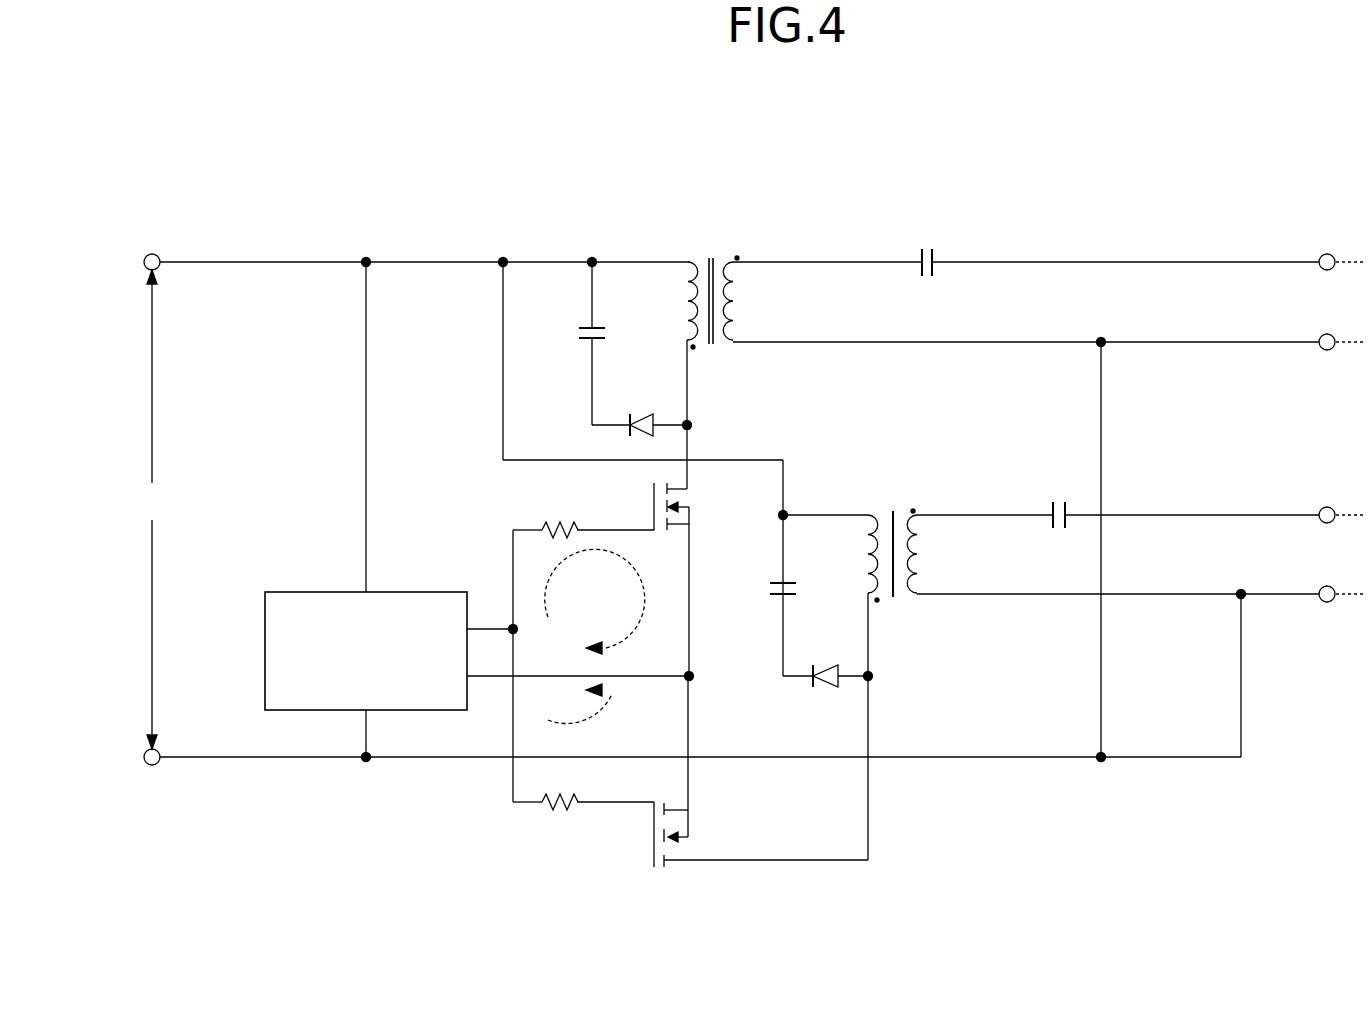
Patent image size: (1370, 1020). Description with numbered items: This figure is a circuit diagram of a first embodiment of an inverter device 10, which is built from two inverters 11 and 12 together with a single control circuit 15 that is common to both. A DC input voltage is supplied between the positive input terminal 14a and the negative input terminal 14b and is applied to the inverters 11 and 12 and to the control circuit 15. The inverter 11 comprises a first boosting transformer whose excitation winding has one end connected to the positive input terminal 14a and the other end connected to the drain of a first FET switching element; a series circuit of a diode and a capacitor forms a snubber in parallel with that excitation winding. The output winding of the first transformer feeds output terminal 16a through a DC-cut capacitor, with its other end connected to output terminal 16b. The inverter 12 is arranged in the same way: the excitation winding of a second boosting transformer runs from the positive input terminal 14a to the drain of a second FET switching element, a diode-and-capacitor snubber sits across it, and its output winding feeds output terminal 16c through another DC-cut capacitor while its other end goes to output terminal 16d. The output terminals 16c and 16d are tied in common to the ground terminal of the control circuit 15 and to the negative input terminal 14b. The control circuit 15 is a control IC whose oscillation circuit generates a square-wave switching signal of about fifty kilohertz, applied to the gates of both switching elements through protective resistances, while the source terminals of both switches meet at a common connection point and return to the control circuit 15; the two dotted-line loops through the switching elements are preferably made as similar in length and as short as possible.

The inverter device 10 is at (568, 163).
The inverter 11 is at (778, 216).
The inverter 12 is at (948, 475).
The positive input terminal 14a is at (152, 253).
The negative input terminal 14b is at (152, 766).
The control circuit 15 is at (410, 592).
The output terminal 16a is at (1327, 253).
The output terminal 16b is at (1327, 351).
The output terminal 16c is at (1327, 506).
The output terminal 16d is at (1327, 603).